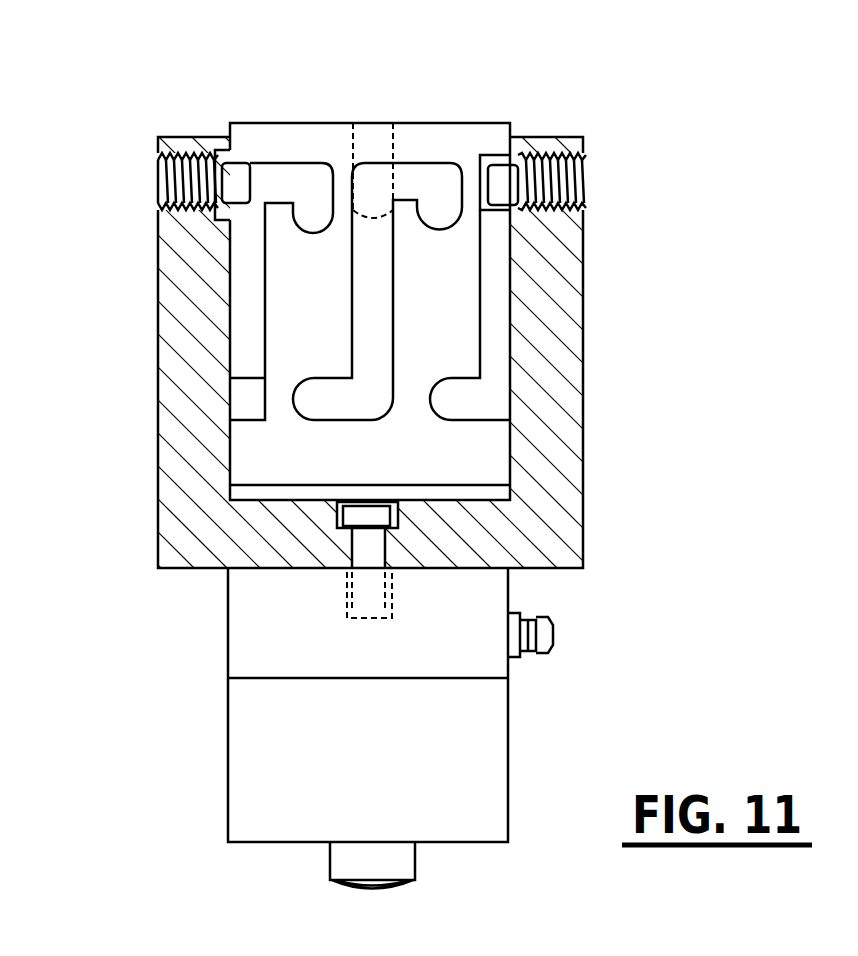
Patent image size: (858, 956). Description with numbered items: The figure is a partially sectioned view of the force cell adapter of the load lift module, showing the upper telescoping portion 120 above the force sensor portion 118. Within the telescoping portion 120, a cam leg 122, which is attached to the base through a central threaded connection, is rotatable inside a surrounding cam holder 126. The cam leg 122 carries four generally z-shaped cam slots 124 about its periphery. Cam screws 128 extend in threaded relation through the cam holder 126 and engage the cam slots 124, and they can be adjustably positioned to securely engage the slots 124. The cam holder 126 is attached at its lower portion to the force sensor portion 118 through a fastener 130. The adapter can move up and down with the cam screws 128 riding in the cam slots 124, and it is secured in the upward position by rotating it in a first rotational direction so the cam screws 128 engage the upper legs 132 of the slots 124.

The force sensor portion 118 is at (648, 653).
The upper telescoping portion 120 is at (626, 527).
The cam leg 122 is at (480, 122).
The cam slots 124 is at (370, 291).
The cam holder 126 is at (582, 382).
The cam screws 128 is at (588, 165).
The fastener 130 is at (363, 541).
The upper legs 132 is at (412, 162).